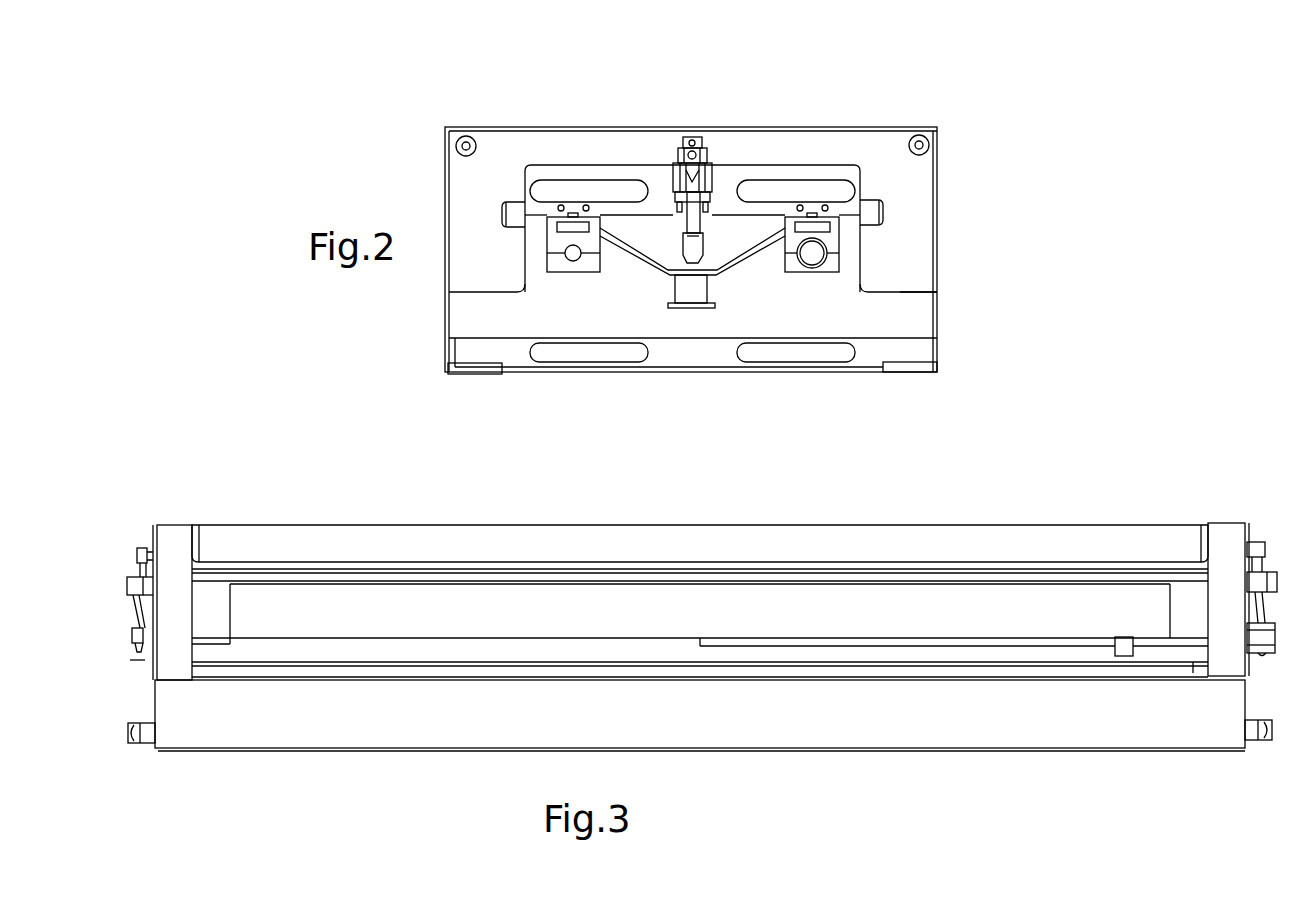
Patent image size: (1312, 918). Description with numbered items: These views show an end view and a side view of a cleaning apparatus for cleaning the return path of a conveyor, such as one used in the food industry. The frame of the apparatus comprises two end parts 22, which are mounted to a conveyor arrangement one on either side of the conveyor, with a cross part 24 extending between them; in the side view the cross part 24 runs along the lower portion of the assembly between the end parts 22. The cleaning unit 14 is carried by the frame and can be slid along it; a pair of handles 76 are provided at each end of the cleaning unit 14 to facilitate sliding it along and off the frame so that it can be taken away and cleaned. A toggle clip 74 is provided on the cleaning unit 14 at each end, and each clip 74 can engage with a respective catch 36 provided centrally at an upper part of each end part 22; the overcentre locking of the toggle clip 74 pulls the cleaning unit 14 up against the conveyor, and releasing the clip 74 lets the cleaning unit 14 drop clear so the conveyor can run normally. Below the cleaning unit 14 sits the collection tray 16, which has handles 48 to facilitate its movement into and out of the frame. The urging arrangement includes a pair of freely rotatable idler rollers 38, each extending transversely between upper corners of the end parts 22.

In FIG. 2, the cleaning unit 14 is at (737, 240).
In FIG. 2, the collection tray 16 is at (691, 352).
In FIG. 2, the end parts 22 is at (905, 224).
In FIG. 3, the end parts 22 is at (177, 548).
In FIG. 3, the cross part 24 is at (775, 711).
In FIG. 2, the catch 36 is at (690, 135).
In FIG. 3, the catch 36 is at (146, 546).
In FIG. 3, the idler rollers 38 is at (1037, 542).
In FIG. 2, the handles 48 is at (808, 352).
In FIG. 2, the toggle clip 74 is at (693, 247).
In FIG. 3, the toggle clip 74 is at (135, 650).
In FIG. 2, the handles 76 is at (810, 188).